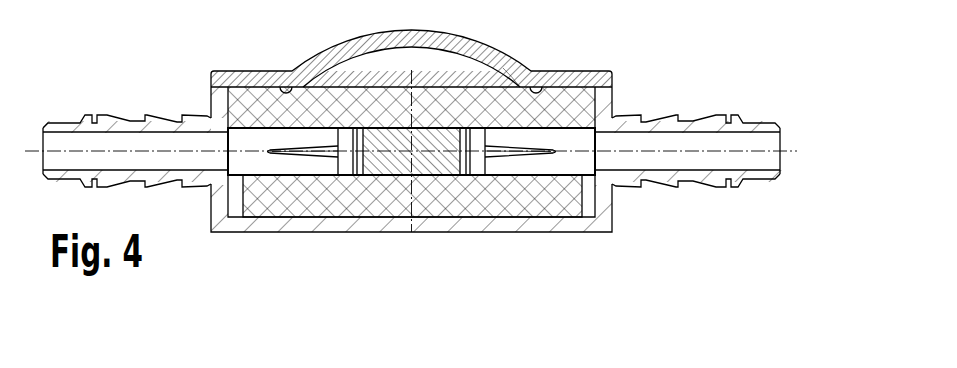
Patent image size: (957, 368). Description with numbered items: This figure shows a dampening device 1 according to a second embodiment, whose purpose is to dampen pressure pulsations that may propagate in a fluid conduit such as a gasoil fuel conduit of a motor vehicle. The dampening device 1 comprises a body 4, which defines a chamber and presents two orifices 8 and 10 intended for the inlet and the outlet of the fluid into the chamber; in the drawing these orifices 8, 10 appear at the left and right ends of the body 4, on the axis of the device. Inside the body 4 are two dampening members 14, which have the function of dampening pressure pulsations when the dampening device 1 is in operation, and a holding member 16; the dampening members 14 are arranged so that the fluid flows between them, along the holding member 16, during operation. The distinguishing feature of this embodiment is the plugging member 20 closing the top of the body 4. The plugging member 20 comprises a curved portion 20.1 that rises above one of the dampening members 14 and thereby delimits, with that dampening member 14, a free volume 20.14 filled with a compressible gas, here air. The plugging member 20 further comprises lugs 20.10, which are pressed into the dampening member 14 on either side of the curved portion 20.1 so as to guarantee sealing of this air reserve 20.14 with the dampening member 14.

The dampening device 1 is at (413, 150).
The body 4 is at (471, 218).
The orifice 8 is at (214, 157).
The orifice 10 is at (610, 139).
The dampening member 14 is at (238, 103).
The holding member 16 is at (293, 160).
The plugging member 20 is at (412, 46).
The curved portion 20.1 is at (503, 68).
The lugs 20.10 is at (287, 88).
The free volume 20.14 is at (358, 66).